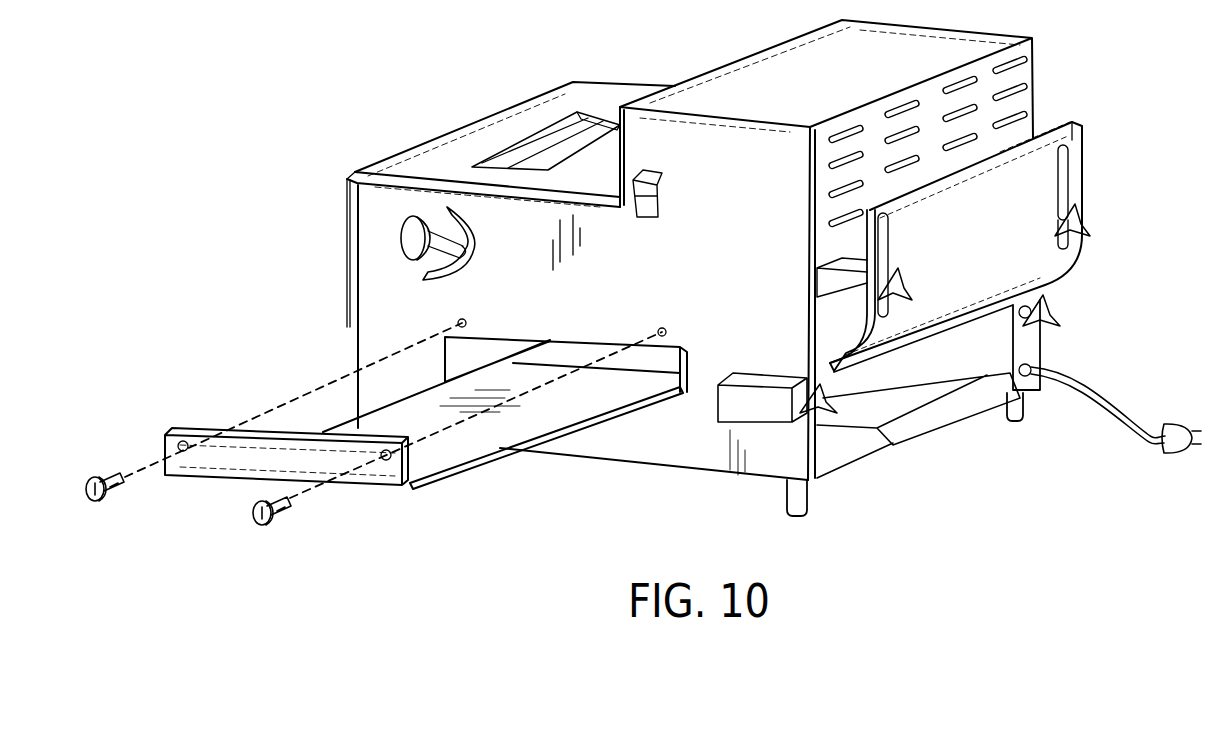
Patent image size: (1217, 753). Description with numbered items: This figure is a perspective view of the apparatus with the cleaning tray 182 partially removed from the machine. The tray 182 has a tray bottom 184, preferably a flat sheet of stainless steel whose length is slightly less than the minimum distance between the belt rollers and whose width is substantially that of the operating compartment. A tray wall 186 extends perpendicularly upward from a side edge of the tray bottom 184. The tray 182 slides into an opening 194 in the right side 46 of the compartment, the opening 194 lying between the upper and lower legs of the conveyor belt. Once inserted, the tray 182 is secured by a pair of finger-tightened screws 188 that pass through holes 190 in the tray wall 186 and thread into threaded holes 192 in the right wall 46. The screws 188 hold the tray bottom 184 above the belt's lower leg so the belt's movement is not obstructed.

The right side 46 is at (752, 213).
The cleaning tray 182 is at (358, 488).
The tray bottom 184 is at (463, 467).
The tray wall 186 is at (188, 427).
The finger-tightened screws 188 is at (97, 501).
The holes 190 is at (190, 449).
The threaded holes 192 is at (466, 321).
The opening 194 is at (587, 337).